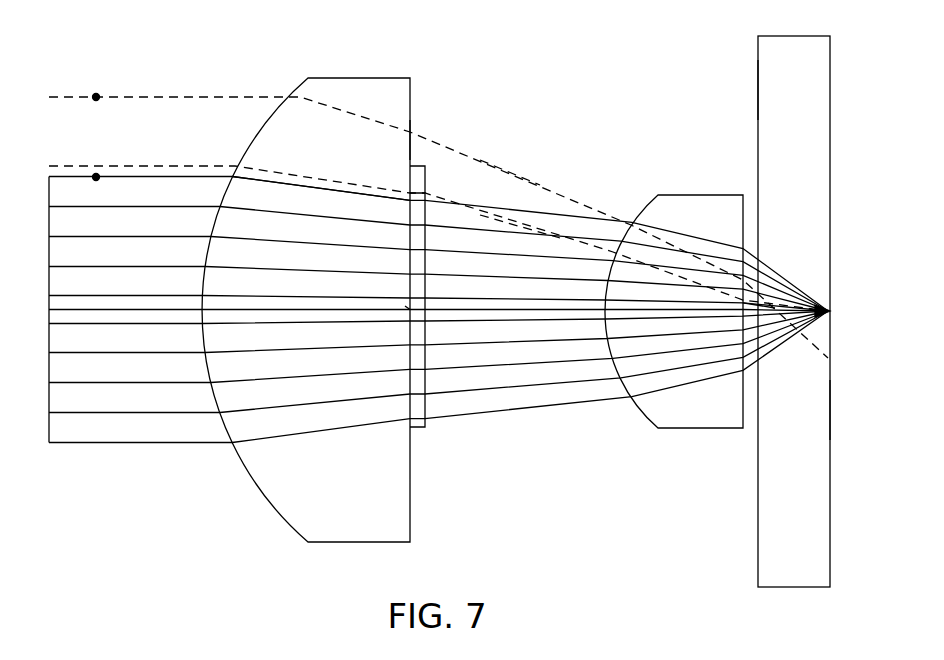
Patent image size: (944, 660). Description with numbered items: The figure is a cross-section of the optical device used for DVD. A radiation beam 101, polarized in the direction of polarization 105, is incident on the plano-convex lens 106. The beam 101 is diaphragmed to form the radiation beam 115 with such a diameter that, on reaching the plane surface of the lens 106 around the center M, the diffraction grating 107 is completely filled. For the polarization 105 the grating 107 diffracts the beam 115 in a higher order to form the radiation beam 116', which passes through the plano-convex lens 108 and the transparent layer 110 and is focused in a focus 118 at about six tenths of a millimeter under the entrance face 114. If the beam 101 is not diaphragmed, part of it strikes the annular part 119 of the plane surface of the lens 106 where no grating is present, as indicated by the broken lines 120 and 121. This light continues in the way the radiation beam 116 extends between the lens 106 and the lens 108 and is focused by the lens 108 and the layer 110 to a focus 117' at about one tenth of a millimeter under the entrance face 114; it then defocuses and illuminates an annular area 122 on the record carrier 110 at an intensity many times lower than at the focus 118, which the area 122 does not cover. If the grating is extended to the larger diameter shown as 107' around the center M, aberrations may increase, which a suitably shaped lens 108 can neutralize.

The radiation beam 101 is at (62, 260).
The direction of polarization 105 is at (96, 97).
The plano-convex lens 106 is at (361, 78).
The diffraction grating 107 is at (464, 305).
The diffraction grating 107' is at (456, 152).
The plano-convex lens 108 is at (705, 200).
The transparent layer 110 is at (765, 40).
The entrance face 114 is at (758, 93).
The radiation beam 115 is at (289, 232).
The radiation beam 116 is at (517, 131).
The radiation beam 116' is at (534, 194).
The focus 117' is at (778, 267).
The focus 118 is at (830, 311).
The annular part 119 is at (413, 150).
The broken line 120 is at (200, 97).
The broken line 121 is at (152, 166).
The annular area 122 is at (831, 412).
The center M is at (405, 306).